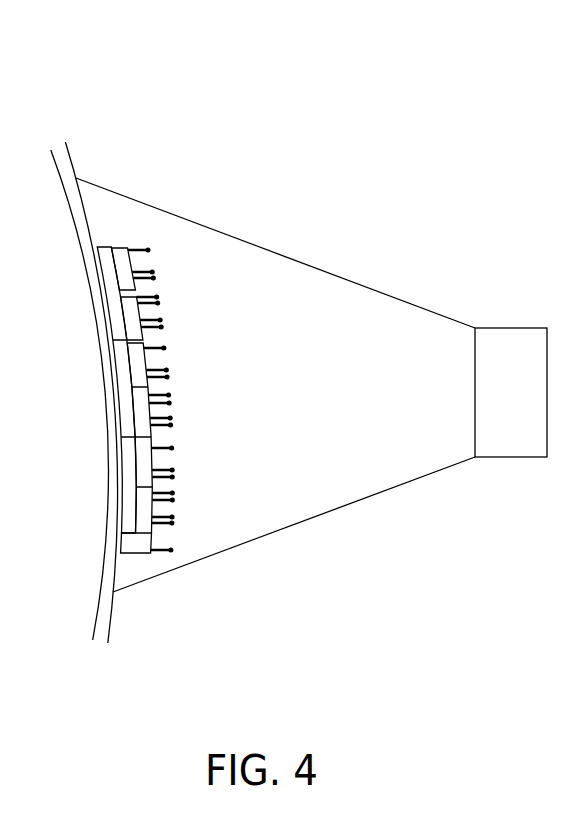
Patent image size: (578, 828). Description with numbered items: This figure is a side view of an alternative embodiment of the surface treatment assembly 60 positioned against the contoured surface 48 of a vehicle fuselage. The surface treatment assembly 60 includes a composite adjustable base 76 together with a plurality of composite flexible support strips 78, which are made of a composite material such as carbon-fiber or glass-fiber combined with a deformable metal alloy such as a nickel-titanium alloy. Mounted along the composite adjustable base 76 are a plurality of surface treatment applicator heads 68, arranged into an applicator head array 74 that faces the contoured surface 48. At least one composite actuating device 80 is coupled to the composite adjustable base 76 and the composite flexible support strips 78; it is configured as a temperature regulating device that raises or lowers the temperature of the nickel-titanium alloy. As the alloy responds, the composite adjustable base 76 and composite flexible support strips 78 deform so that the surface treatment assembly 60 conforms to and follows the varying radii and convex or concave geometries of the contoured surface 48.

The contoured surface 48 is at (70, 162).
The surface treatment assembly 60 is at (312, 347).
The surface treatment applicator heads 68 is at (120, 265).
The applicator head array 74 is at (312, 389).
The composite adjustable base 76 is at (78, 178).
The composite flexible support strips 78 is at (117, 600).
The composite actuating device 80 is at (512, 445).